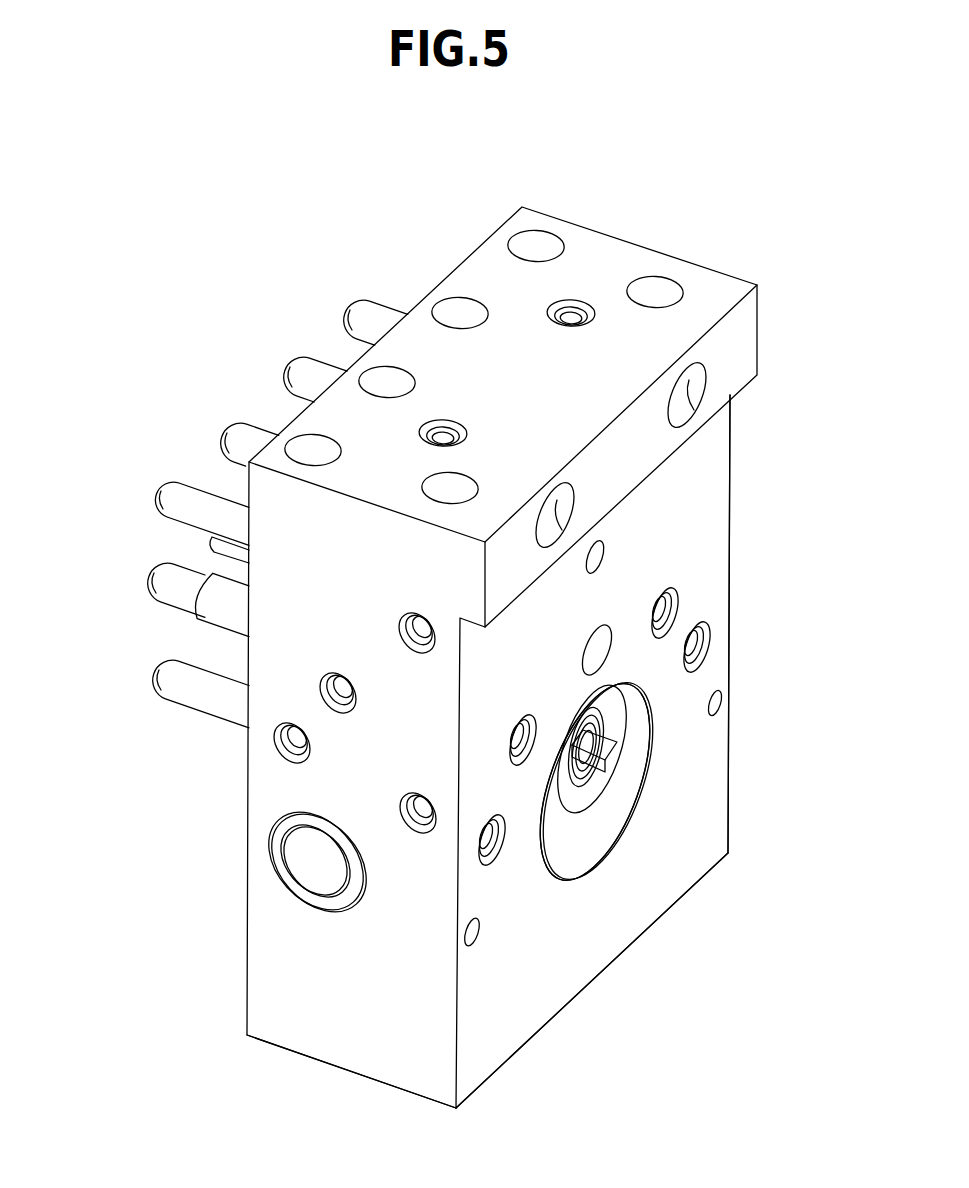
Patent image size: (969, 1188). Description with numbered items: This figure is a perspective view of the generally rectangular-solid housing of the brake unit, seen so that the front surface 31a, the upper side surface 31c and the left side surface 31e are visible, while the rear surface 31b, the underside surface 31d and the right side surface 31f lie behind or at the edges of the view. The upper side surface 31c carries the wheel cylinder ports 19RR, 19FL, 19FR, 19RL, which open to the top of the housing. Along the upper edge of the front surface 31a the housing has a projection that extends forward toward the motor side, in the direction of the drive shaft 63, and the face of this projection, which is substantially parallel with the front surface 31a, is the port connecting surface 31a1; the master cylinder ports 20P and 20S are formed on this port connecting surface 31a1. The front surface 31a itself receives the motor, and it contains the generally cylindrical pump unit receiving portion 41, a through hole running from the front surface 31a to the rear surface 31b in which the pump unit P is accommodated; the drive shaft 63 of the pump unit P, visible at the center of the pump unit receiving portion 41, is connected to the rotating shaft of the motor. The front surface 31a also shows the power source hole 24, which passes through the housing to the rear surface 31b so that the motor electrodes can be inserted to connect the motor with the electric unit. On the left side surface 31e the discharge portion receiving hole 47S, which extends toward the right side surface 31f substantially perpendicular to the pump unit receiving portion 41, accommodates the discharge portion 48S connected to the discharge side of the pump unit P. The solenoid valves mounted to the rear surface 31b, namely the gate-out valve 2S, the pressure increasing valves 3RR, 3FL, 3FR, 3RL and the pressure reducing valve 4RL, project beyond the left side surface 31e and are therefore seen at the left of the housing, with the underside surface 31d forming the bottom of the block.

The wheel cylinder port 19RR is at (541, 240).
The wheel cylinder port 19FL is at (461, 312).
The wheel cylinder port 19FR is at (400, 380).
The wheel cylinder port 19RL is at (330, 448).
The pressure increasing valve 3RR is at (357, 317).
The pressure increasing valve 3FL is at (302, 378).
The pressure increasing valve 3FR is at (240, 443).
The pressure increasing valve 3RL is at (175, 500).
The pressure reducing valve 4RL is at (170, 582).
The gate-out valve 2S is at (172, 680).
The discharge portion 48S is at (305, 852).
The discharge portion receiving hole 47S is at (285, 878).
The rear surface 31b is at (247, 965).
The left side surface 31e is at (352, 1027).
The front surface 31a is at (510, 1013).
The pump unit receiving portion 41 is at (565, 882).
The pump unit P is at (606, 875).
The underside surface 31d is at (692, 883).
The drive shaft 63 is at (612, 758).
The right side surface 31f is at (728, 735).
The power source hole 24 is at (607, 663).
The master cylinder port 20S is at (575, 525).
The master cylinder port 20P is at (695, 395).
The port connecting surface 31a1 is at (745, 337).
The upper side surface 31c is at (708, 287).